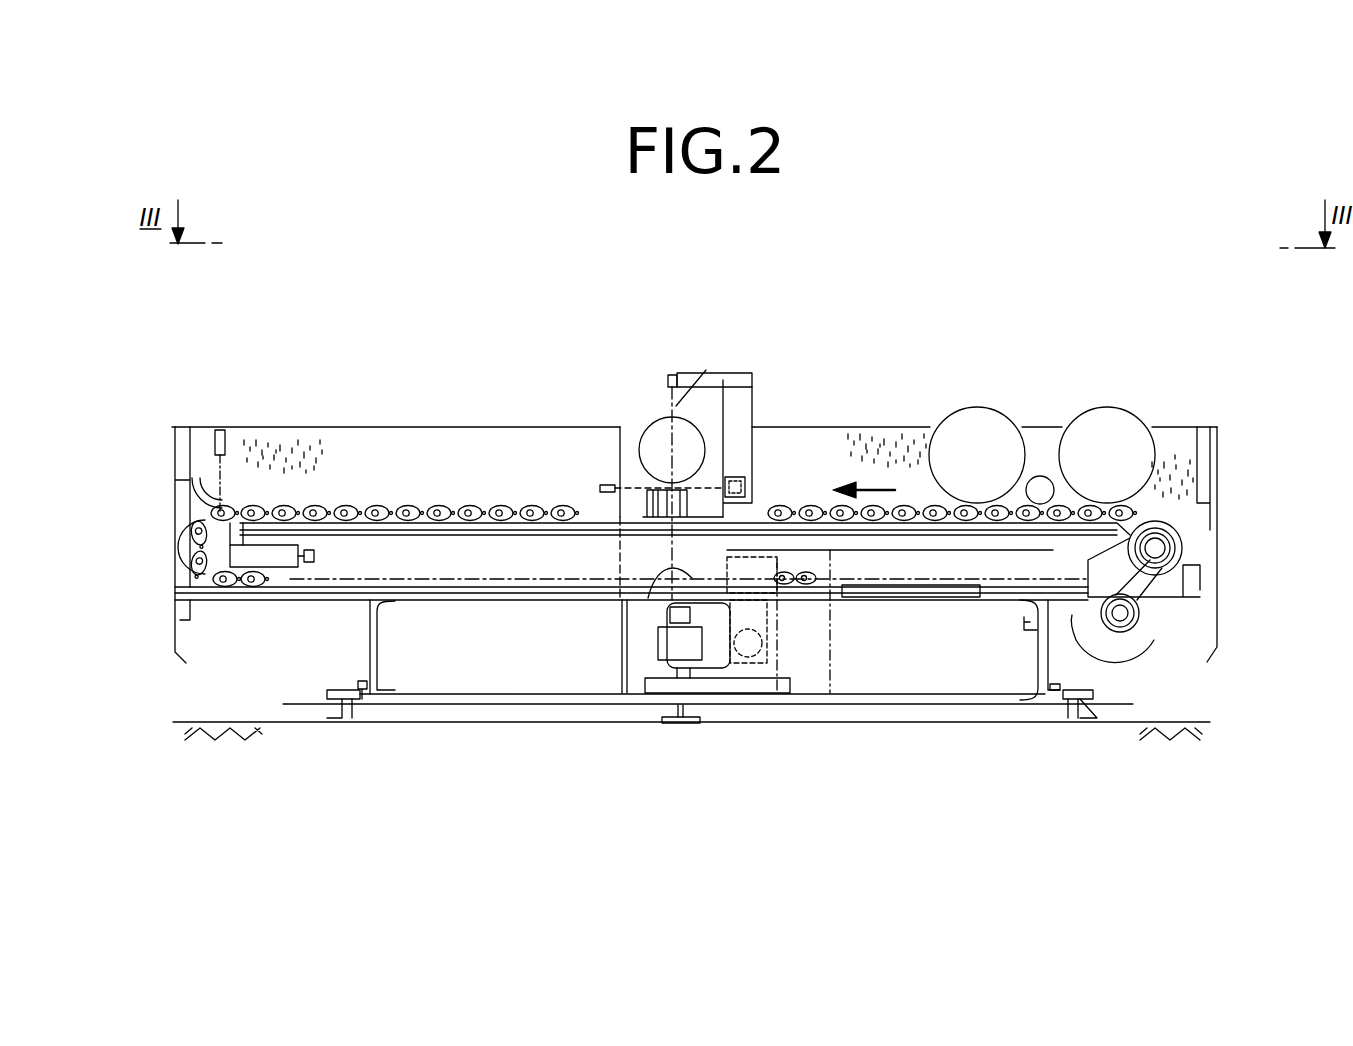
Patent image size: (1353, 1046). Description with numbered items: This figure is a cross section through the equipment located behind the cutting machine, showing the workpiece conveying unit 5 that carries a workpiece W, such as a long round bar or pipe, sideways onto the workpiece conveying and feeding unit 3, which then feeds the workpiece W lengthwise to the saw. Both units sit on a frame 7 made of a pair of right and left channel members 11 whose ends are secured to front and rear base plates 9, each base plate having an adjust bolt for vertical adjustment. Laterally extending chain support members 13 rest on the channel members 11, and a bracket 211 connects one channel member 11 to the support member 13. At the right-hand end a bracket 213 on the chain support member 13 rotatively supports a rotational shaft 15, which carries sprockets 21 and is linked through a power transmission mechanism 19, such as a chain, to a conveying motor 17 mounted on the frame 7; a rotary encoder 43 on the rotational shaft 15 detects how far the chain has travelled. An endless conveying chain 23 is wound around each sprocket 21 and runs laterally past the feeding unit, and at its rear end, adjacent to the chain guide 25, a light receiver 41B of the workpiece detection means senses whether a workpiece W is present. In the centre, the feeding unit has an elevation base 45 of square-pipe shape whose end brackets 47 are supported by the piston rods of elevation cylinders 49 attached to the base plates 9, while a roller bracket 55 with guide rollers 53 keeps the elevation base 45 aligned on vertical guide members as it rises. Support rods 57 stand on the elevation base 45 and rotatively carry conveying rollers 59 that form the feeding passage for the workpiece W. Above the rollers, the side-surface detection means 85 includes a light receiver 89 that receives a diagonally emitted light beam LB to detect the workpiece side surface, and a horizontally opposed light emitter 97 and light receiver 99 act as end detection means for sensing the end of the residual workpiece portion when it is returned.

The workpiece conveying and feeding unit 3 is at (652, 452).
The workpiece conveying unit 5 is at (362, 476).
The frame 7 is at (455, 718).
The base plate 9 is at (525, 700).
The channel member 11 is at (370, 640).
The chain support member 13 is at (464, 602).
The rotational shaft 15 is at (1150, 580).
The conveying motor 17 is at (1130, 650).
The power transmission mechanism 19 is at (1120, 613).
The sprocket 21 is at (1183, 548).
The conveying chain 23 is at (420, 508).
The chain guide 25 is at (193, 515).
The light receiver 41B is at (235, 427).
The rotary encoder 43 is at (1170, 522).
The elevation base 45 is at (790, 648).
The bracket 47 is at (641, 613).
The elevation cylinder 49 is at (657, 647).
The guide roller 53 is at (748, 660).
The roller bracket 55 is at (773, 608).
The support rod 57 is at (670, 548).
The conveying roller 59 is at (695, 507).
The side-surface detection means 85 is at (764, 356).
The light receiver 89 is at (672, 372).
The light emitter 97 is at (737, 475).
The light receiver 99 is at (604, 485).
The bracket 211 is at (1058, 603).
The bracket 213 is at (1185, 593).
The light beam LB is at (706, 370).
The workpiece W is at (655, 418).